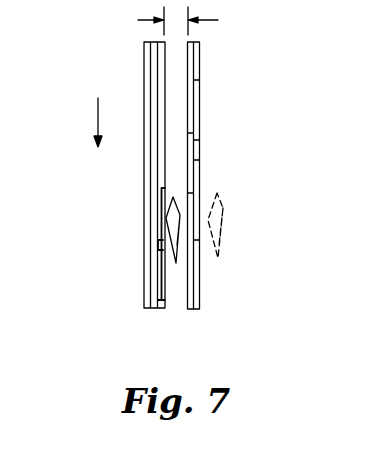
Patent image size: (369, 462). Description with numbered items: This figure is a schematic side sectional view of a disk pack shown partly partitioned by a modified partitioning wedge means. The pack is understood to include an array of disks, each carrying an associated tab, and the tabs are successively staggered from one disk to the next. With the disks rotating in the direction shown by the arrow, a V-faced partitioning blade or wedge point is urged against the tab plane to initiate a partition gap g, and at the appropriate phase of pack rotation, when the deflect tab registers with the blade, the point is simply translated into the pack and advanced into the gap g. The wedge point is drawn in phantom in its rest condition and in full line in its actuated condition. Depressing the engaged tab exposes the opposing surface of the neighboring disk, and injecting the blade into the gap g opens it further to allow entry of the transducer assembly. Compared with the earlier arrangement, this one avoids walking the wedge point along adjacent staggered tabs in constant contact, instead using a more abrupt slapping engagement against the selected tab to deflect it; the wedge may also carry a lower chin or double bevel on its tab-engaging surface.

The partition gap g is at (192, 21).